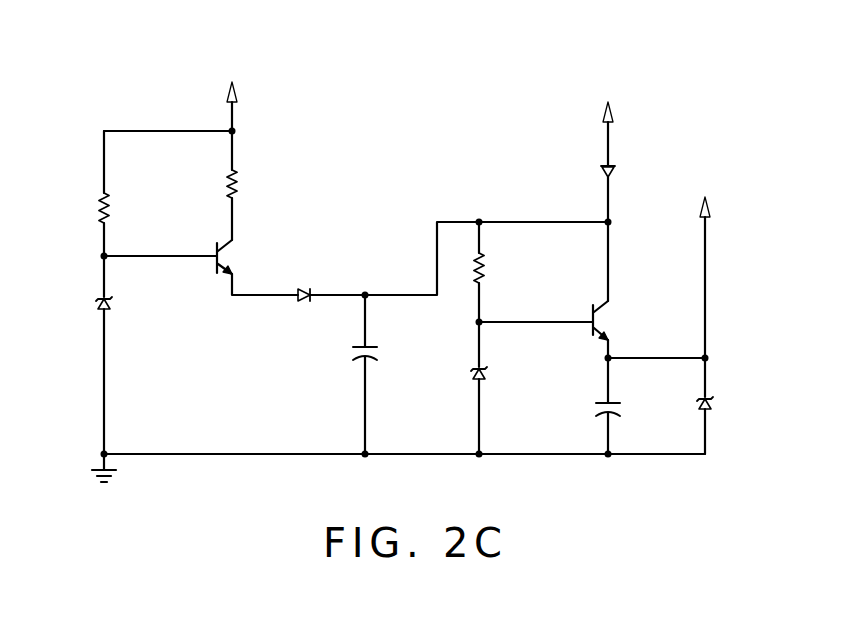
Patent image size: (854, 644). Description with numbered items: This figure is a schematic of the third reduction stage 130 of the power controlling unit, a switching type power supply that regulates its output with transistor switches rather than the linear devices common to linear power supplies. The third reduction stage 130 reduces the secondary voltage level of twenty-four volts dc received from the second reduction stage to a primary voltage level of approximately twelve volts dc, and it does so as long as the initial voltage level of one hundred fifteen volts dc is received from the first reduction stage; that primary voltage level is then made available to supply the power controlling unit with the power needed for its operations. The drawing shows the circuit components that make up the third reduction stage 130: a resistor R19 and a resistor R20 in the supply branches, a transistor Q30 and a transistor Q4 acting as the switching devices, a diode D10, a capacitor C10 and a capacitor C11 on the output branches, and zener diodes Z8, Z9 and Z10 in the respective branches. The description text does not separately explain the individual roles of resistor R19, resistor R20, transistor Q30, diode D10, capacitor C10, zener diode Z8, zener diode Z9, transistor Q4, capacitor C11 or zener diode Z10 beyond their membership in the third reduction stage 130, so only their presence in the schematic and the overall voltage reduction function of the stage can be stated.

The third reduction stage 130 is at (405, 146).
The resistor R19 is at (99, 212).
The resistor R20 is at (238, 175).
The transistor Q30 is at (233, 254).
The diode D10 is at (298, 299).
The capacitor C10 is at (350, 350).
The zener diode Z8 is at (96, 304).
The zener diode Z9 is at (471, 374).
The transistor Q4 is at (600, 321).
The capacitor C11 is at (596, 404).
The zener diode Z10 is at (714, 406).